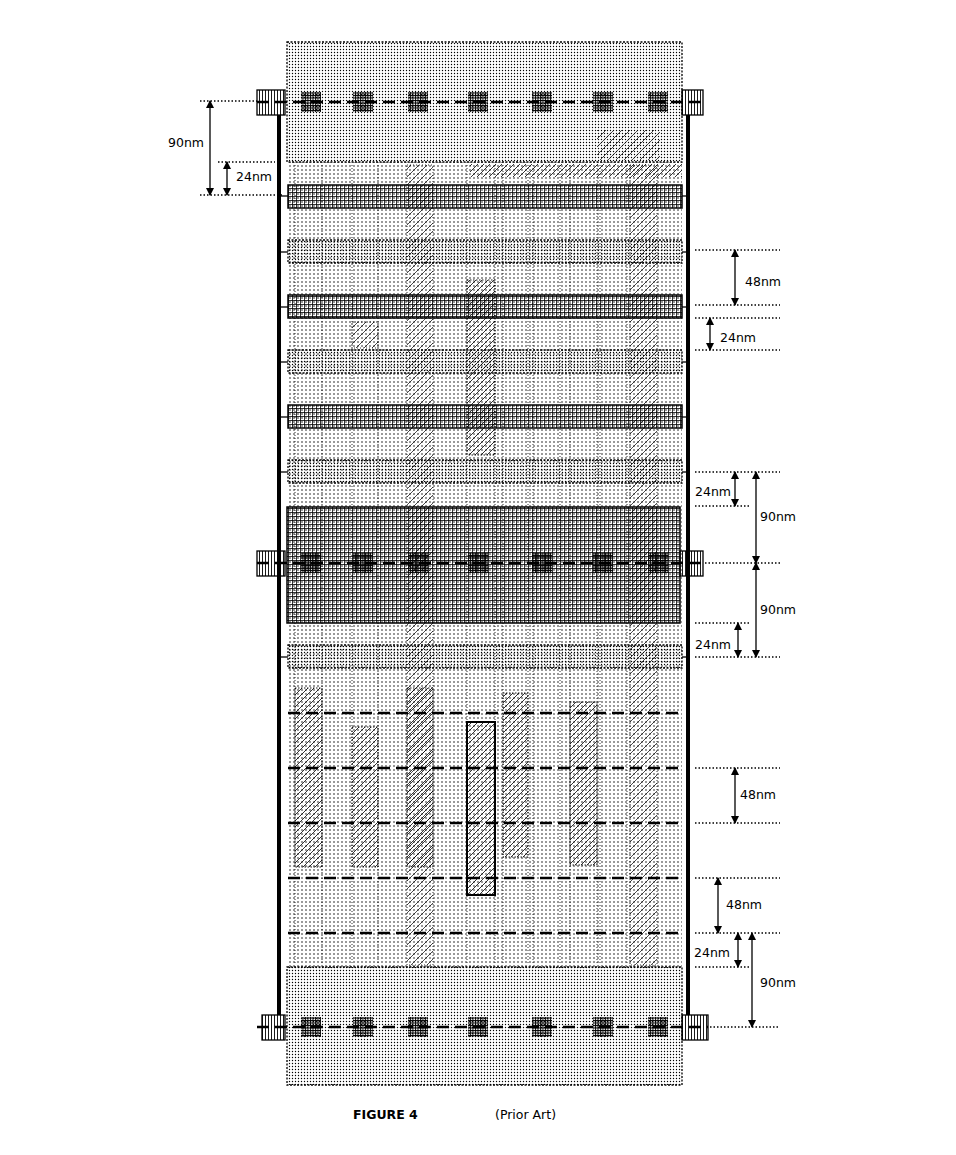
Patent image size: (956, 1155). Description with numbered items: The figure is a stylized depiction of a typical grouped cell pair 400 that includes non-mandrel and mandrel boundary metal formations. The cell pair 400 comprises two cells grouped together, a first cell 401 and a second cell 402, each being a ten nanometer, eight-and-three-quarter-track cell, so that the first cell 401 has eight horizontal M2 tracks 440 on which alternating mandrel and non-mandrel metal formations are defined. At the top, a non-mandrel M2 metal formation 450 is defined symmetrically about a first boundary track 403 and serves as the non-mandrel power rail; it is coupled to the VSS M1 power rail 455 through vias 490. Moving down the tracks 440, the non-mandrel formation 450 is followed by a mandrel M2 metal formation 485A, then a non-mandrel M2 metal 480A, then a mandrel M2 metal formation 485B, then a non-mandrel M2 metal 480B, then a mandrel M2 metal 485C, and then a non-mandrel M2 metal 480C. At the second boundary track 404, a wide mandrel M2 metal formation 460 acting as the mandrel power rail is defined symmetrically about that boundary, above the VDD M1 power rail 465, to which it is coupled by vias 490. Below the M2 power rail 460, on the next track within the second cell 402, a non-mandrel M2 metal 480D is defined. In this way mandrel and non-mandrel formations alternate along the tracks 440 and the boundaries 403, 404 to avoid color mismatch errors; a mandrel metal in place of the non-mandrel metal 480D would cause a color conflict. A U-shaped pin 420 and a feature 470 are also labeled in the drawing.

The cell pair 400 is at (190, 40).
The first cell 401 is at (156, 101).
The second cell 402 is at (157, 1022).
The first boundary track 403 is at (400, 98).
The second boundary track 404 is at (636, 640).
The U-shaped pin 420 is at (577, 168).
The M2 tracks 440 is at (278, 822).
The non-mandrel M2 metal formation 450 is at (600, 66).
The VSS M1 power rail 455 is at (752, 93).
The mandrel M2 metal formation 460 is at (280, 603).
The VDD M1 power rail 465 is at (256, 572).
The cut region 470 is at (360, 337).
The non-mandrel M2 metal 480A is at (283, 267).
The non-mandrel M2 metal 480B is at (283, 405).
The non-mandrel M2 metal 480C is at (283, 497).
The non-mandrel M2 metal 480D is at (278, 672).
The mandrel M2 metal formation 485A is at (283, 206).
The mandrel M2 metal formation 485B is at (283, 328).
The mandrel M2 metal formation 485C is at (283, 455).
The vias 490 is at (690, 452).